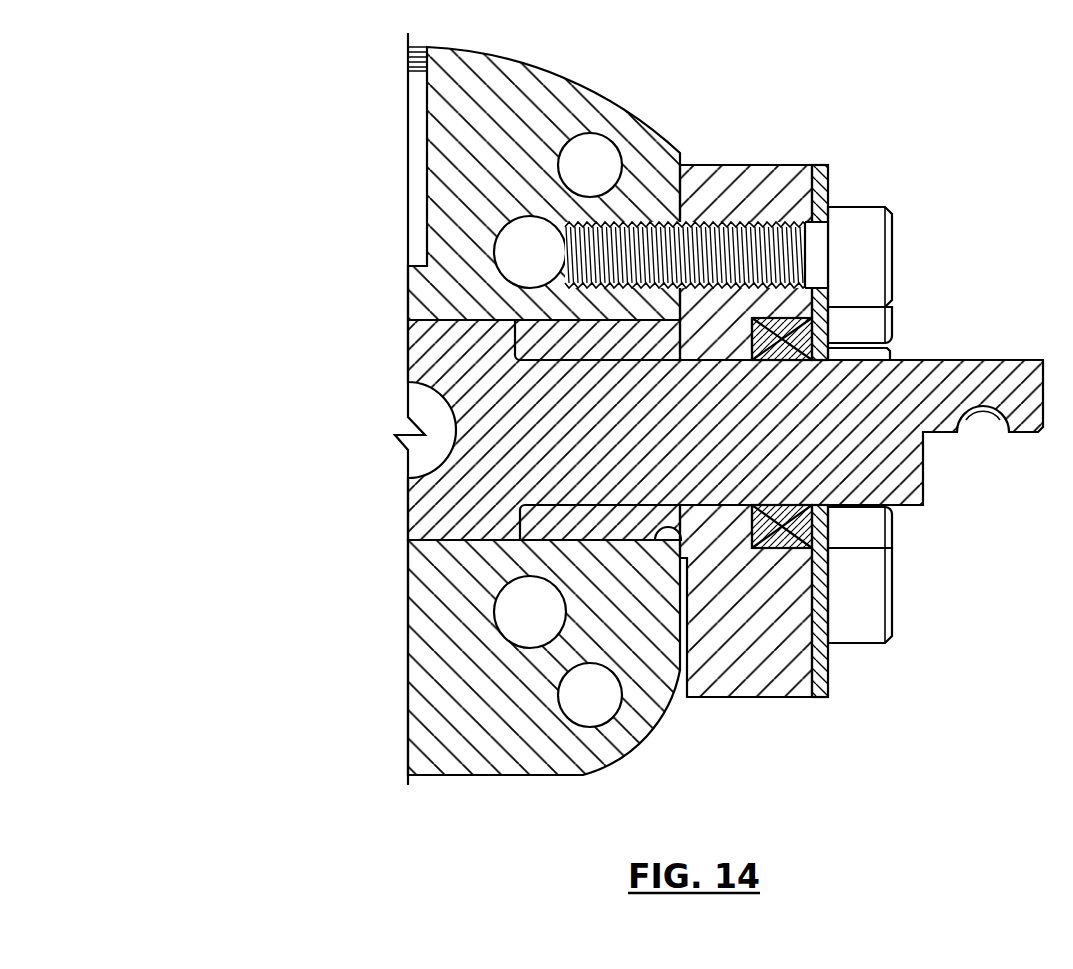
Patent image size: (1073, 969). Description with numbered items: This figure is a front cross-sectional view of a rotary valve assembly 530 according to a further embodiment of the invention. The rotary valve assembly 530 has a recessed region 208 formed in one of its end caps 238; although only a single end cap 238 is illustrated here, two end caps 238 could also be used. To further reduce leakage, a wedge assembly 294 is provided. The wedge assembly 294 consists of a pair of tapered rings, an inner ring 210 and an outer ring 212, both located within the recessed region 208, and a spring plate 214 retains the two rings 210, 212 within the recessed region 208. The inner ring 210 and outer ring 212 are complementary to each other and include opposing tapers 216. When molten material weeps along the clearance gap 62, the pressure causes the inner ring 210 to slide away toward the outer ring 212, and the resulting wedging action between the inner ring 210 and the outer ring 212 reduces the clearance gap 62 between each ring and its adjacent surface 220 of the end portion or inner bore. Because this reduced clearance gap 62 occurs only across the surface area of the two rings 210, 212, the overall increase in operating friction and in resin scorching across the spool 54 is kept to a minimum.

The spool 54 is at (420, 357).
The clearance gap 62 is at (600, 368).
The wedge assembly 294 is at (768, 317).
The outer ring 212 is at (813, 335).
The inner ring 210 is at (795, 352).
The adjacent surface 220 is at (790, 505).
The opposing tapers 216 is at (770, 518).
The recessed region 208 is at (775, 548).
The spring plate 214 is at (828, 670).
The end cap 238 is at (721, 690).
The rotary valve assembly 530 is at (318, 644).